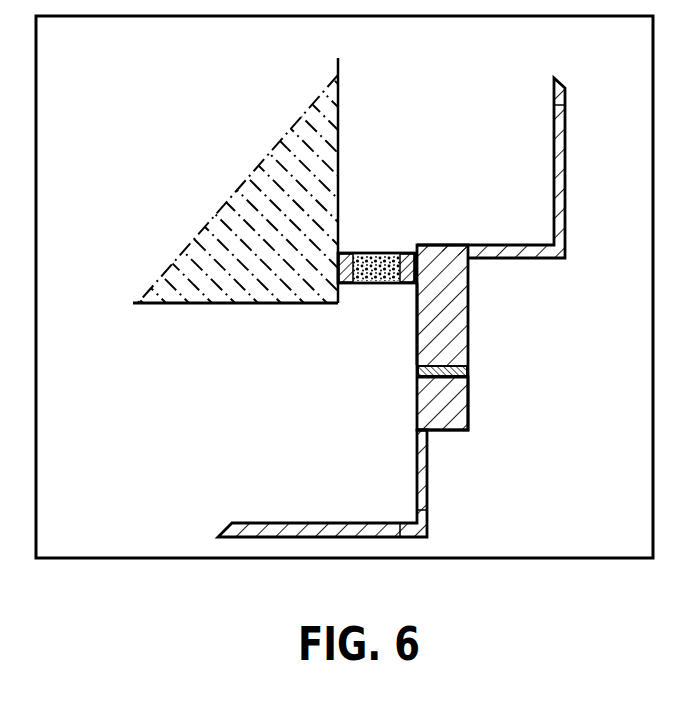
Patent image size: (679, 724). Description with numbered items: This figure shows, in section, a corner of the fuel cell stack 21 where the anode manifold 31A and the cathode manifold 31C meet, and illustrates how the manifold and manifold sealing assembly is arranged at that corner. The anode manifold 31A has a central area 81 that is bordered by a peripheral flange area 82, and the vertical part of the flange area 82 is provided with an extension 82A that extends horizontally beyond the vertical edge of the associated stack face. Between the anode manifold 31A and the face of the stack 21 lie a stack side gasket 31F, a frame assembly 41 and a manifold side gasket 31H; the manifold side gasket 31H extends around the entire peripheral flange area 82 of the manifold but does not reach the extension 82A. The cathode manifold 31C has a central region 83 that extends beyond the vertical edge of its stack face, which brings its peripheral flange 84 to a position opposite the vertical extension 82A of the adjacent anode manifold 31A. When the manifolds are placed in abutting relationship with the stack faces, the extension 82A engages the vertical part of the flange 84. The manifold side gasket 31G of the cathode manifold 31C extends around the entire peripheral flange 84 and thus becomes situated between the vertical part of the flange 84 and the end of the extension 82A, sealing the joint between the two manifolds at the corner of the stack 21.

The fuel cell stack 21 is at (338, 72).
The frame assembly 41 is at (370, 284).
The stack side gasket 31F is at (346, 252).
The manifold side gasket 31H is at (413, 250).
The central area 81 is at (562, 128).
The anode manifold 31A is at (565, 100).
The peripheral flange area 82 is at (458, 290).
The extension 82A is at (427, 325).
The manifold side gasket 31G is at (462, 372).
The peripheral flange 84 is at (438, 415).
The central region 83 is at (392, 522).
The cathode manifold 31C is at (427, 521).